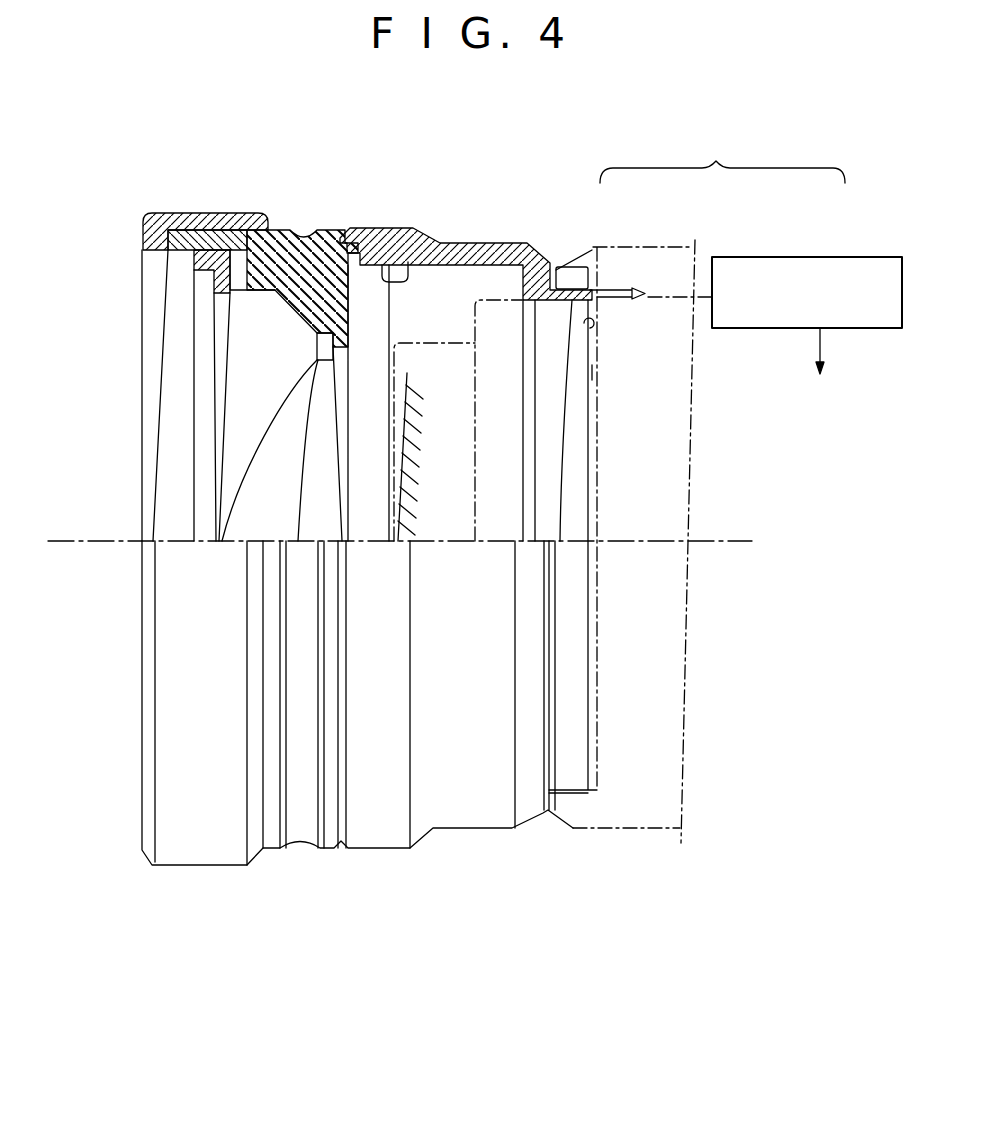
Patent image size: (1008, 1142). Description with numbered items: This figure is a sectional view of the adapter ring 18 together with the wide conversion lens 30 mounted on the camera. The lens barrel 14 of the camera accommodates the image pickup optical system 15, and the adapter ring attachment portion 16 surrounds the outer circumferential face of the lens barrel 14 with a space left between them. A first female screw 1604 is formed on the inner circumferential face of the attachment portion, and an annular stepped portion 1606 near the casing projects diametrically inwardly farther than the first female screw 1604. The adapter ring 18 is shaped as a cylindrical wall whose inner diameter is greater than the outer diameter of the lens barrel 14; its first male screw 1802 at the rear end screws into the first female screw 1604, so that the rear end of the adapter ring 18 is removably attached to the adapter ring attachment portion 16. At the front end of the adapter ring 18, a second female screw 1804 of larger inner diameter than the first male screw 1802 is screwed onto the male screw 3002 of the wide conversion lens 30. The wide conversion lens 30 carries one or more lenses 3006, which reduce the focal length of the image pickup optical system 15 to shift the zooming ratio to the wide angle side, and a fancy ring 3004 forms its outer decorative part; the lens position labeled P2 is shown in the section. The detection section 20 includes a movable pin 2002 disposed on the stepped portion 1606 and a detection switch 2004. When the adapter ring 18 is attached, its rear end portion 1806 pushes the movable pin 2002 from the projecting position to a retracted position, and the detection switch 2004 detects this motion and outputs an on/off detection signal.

The wide conversion lens 30 is at (265, 185).
The fancy ring 3004 is at (183, 213).
The male screw 3002 is at (367, 228).
The lenses 3006 is at (330, 478).
The position P2 is at (389, 415).
The adapter ring 18 is at (463, 238).
The second female screw 1804 is at (408, 262).
The lens barrel 14 is at (472, 292).
The image pickup optical system 15 is at (407, 373).
The first male screw 1802 is at (562, 267).
The detection section 20 is at (722, 155).
The movable pin 2002 is at (623, 290).
The detection switch 2004 is at (788, 257).
The first female screw 1604 is at (574, 375).
The annular stepped portion 1606 is at (590, 328).
The rear end portion 1806 is at (596, 372).
The adapter ring attachment portion 16 is at (609, 862).